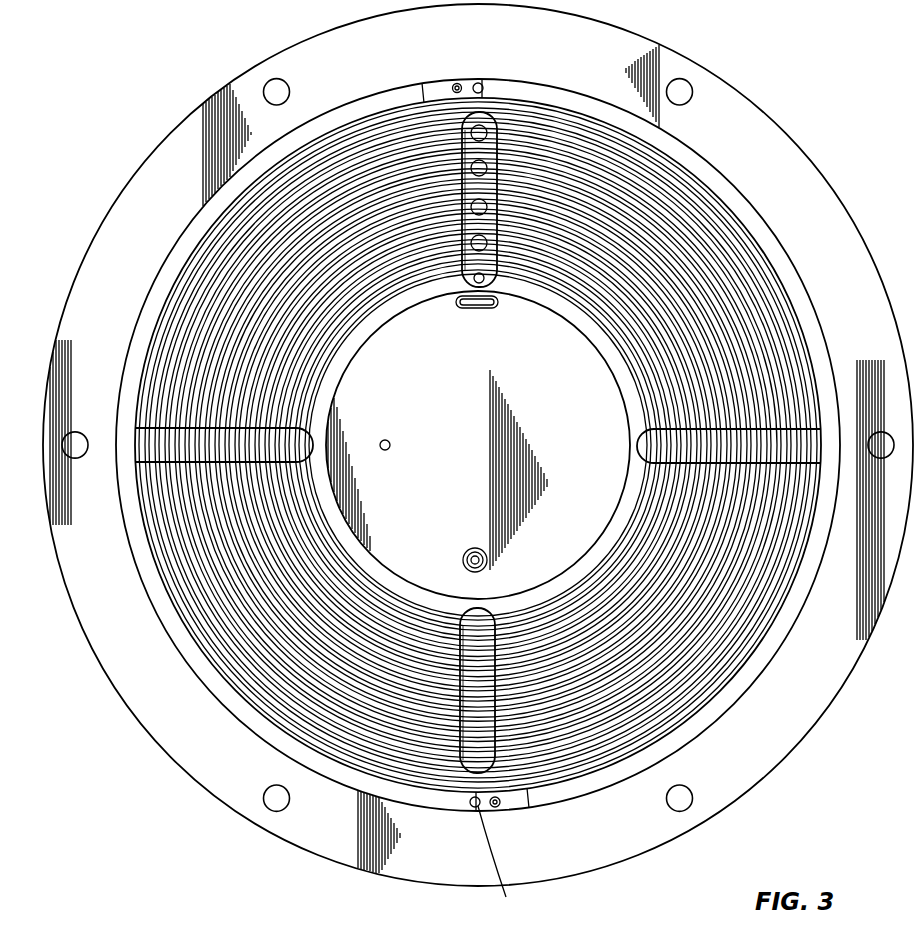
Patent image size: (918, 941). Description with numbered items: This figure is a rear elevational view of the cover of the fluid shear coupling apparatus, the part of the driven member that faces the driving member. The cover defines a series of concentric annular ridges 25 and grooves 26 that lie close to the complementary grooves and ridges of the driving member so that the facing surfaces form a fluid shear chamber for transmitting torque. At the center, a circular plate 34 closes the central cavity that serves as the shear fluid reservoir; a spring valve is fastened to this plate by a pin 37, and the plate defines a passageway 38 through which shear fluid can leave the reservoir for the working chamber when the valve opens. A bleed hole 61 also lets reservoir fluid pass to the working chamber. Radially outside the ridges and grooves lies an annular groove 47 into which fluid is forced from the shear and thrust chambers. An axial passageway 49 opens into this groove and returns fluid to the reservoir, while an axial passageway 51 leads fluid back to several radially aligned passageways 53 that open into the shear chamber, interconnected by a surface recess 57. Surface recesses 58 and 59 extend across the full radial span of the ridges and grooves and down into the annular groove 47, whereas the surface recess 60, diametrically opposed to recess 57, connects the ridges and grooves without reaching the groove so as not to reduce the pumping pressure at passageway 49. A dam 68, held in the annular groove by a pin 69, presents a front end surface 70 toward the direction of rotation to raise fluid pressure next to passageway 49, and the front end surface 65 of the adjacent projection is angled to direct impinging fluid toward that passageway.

The annular ridges 25 is at (690, 705).
The grooves 26 is at (720, 665).
The circular plate 34 is at (585, 427).
The pin 37 is at (470, 552).
The passageway 38 is at (477, 307).
The annular groove 47 is at (738, 197).
The axial passageway 49 is at (471, 801).
The axial passageway 51 is at (484, 86).
The passageways 53 is at (481, 130).
The surface recess 57 is at (470, 187).
The surface recess 58 is at (238, 440).
The surface recess 59 is at (733, 445).
The surface recess 60 is at (470, 702).
The bleed hole 61 is at (388, 441).
The front end surface 65 is at (692, 92).
The dam 68 is at (435, 89).
The pin 69 is at (497, 807).
The front end surface 70 is at (501, 868).